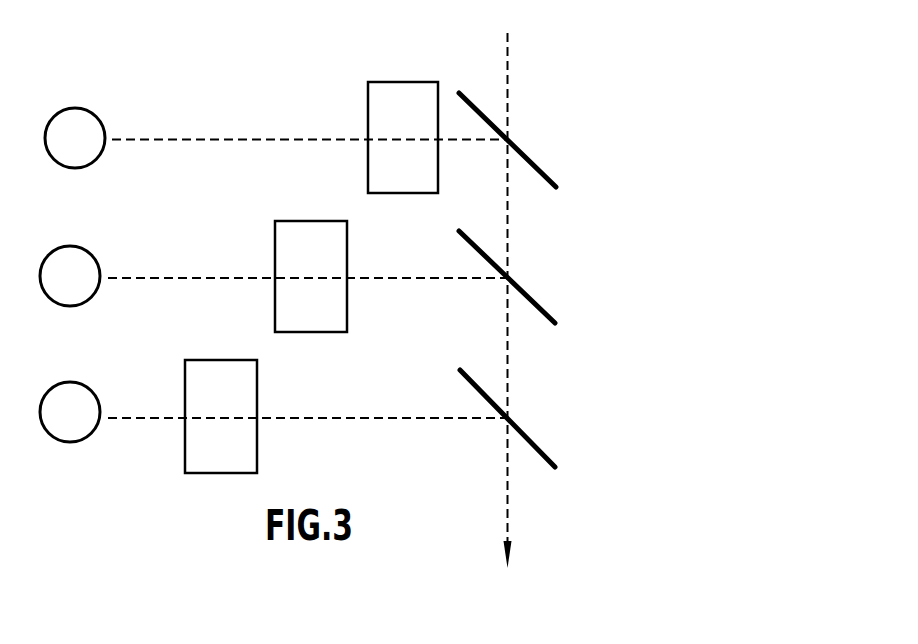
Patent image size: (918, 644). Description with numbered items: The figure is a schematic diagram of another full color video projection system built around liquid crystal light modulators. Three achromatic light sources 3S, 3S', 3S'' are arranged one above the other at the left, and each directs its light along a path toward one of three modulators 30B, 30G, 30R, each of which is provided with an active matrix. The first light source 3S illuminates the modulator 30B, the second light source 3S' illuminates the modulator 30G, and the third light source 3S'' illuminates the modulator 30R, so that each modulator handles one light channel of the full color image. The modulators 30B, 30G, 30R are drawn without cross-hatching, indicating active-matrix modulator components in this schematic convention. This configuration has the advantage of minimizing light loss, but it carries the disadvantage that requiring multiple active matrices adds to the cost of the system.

The achromatic light source 3S is at (75, 138).
The achromatic light source 3S' is at (70, 276).
The achromatic light source 3S'' is at (70, 412).
The modulator 30B is at (400, 66).
The modulator 30G is at (300, 205).
The modulator 30R is at (219, 345).